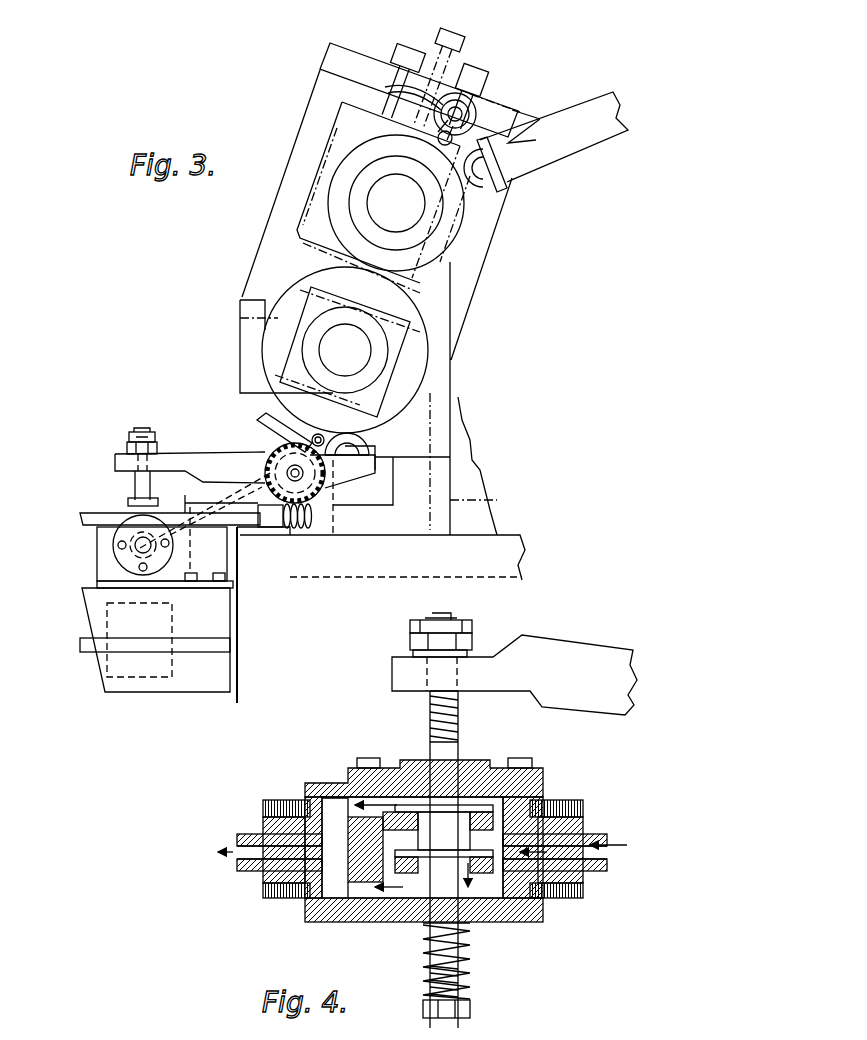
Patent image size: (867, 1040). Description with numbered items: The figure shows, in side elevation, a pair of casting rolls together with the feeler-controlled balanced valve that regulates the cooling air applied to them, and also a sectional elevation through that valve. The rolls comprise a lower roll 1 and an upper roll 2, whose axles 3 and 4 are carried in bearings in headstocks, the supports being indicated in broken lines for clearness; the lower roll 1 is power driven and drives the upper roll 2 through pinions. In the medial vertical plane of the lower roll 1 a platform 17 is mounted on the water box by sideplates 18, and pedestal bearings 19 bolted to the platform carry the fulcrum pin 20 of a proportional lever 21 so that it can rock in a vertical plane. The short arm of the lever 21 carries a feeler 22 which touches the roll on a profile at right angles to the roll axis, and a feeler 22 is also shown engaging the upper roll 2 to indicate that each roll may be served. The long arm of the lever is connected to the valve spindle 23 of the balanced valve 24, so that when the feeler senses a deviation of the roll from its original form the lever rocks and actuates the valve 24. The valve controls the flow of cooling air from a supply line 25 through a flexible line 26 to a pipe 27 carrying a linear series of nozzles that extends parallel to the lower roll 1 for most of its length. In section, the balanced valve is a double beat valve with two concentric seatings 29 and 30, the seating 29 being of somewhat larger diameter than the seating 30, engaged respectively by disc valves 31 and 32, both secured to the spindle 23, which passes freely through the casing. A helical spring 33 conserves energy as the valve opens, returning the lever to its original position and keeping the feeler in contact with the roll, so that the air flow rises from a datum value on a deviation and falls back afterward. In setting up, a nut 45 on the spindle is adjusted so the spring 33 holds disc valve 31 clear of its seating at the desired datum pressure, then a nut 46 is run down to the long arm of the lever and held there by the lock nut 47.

In FIG. 3, the lower roll 1 is at (420, 376).
In FIG. 3, the upper roll 2 is at (430, 262).
In FIG. 3, the axles of the lower roll 3 is at (362, 347).
In FIG. 3, the axles of the upper roll 4 is at (405, 215).
In FIG. 3, the platform 17 is at (258, 528).
In FIG. 3, the sideplates 18 is at (222, 560).
In FIG. 3, the pedestal bearings 19 is at (337, 478).
In FIG. 3, the fulcrum pin 20 is at (275, 452).
In FIG. 3, the proportional lever 21 is at (205, 455).
In FIG. 4, the proportional lever 21 is at (400, 683).
In FIG. 3, the feeler 22 is at (487, 180).
In FIG. 3, the valve spindle 23 is at (135, 488).
In FIG. 4, the valve spindle 23 is at (450, 943).
In FIG. 3, the balanced valve 24 is at (95, 557).
In FIG. 3, the supply line 25 is at (143, 550).
In FIG. 4, the supply line 25 is at (592, 869).
In FIG. 4, the flexible line 26 is at (240, 871).
In FIG. 3, the pipe 27 is at (283, 428).
In FIG. 4, the seating 29 is at (352, 800).
In FIG. 4, the seating 30 is at (395, 880).
In FIG. 4, the disc valve 31 is at (400, 800).
In FIG. 4, the disc valve 32 is at (423, 857).
In FIG. 4, the helical spring 33 is at (470, 982).
In FIG. 4, the nut 45 is at (472, 1010).
In FIG. 3, the nut 46 is at (123, 448).
In FIG. 4, the nut 46 is at (410, 643).
In FIG. 3, the lock nut 47 is at (133, 432).
In FIG. 4, the lock nut 47 is at (410, 628).